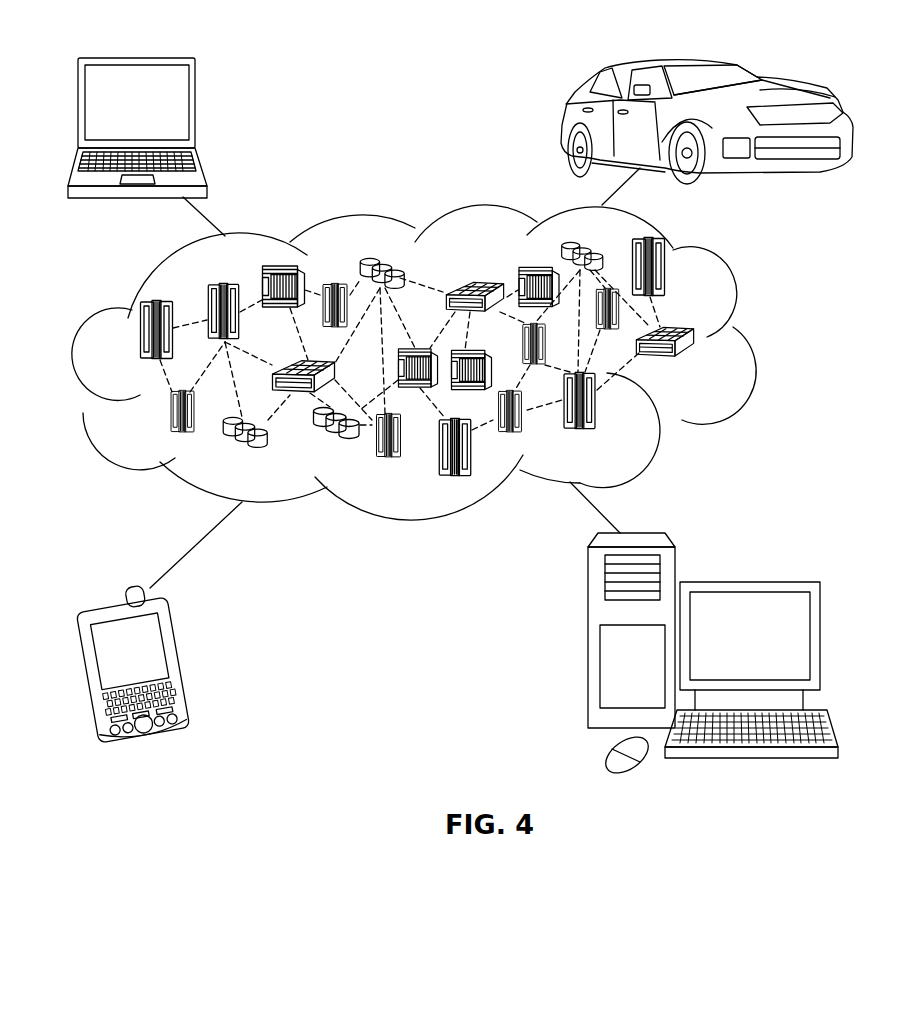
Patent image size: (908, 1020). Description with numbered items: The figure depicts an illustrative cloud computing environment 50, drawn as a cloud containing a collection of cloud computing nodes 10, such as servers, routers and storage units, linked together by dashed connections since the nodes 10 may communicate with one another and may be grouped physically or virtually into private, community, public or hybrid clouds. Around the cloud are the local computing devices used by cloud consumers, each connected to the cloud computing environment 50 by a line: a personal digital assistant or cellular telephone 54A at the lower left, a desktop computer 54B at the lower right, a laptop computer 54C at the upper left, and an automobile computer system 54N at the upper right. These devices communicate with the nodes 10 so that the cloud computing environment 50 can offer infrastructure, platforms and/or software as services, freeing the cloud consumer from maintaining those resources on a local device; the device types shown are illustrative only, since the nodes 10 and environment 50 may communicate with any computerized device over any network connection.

The cloud computing node 10 is at (704, 366).
The cloud computing environment 50 is at (748, 337).
The personal digital assistant or cellular telephone 54A is at (188, 663).
The desktop computer 54B is at (747, 582).
The laptop computer 54C is at (196, 110).
The automobile computer system 54N is at (560, 122).